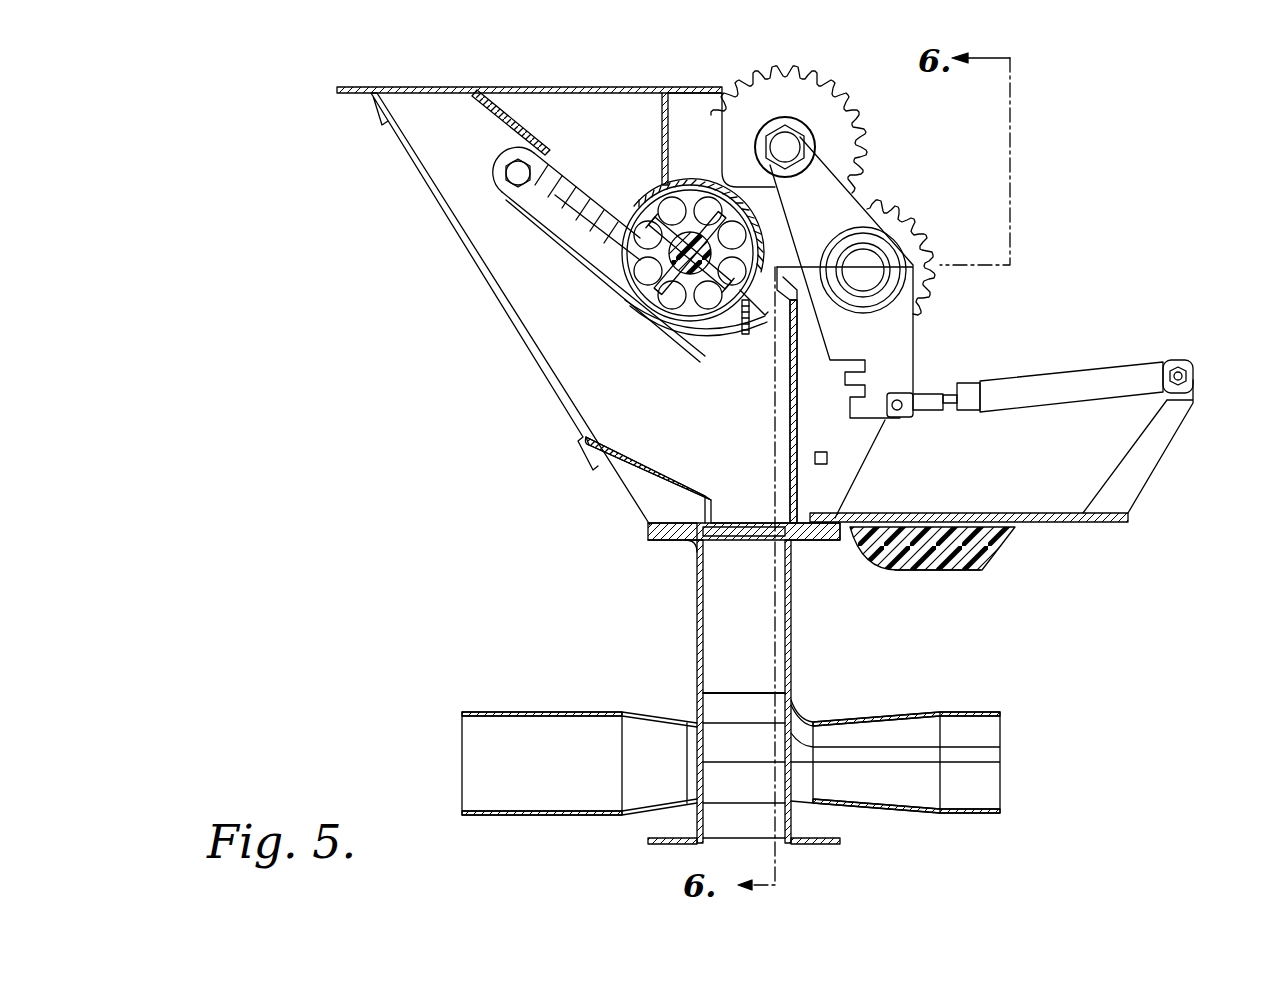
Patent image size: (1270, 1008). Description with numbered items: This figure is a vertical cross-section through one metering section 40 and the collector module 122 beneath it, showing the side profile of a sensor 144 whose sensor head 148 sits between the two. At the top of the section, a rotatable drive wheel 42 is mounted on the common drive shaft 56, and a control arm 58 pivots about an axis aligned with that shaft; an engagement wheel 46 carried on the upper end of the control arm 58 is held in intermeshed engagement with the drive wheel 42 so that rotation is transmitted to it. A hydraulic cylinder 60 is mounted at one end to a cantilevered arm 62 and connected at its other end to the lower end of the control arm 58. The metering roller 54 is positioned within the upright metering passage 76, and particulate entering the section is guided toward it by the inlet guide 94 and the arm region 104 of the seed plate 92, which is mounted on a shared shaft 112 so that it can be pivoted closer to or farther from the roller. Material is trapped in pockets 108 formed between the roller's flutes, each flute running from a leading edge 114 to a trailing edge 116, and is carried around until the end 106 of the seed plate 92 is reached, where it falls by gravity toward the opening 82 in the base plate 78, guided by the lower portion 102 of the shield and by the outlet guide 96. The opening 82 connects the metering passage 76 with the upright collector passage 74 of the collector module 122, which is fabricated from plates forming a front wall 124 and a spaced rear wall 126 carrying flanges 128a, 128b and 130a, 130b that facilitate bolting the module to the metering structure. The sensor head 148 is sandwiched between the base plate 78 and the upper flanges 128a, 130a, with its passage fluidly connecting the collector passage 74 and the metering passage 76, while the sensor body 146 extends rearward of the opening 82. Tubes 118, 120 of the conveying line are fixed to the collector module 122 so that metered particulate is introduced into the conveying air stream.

The metering section 40 is at (350, 133).
The drive wheel 42 is at (908, 222).
The engagement wheel 46 is at (843, 130).
The metering roller 54 is at (742, 232).
The drive shaft 56 is at (862, 274).
The control arm 58 is at (890, 336).
The hydraulic cylinder 60 is at (1146, 372).
The cantilevered arm 62 is at (1040, 513).
The collector passage 74 is at (750, 691).
The metering passage 76 is at (584, 150).
The base plate 78 is at (721, 565).
The opening 82 is at (734, 512).
The seed plate 92 is at (522, 254).
The inlet guide 94 is at (522, 112).
The outlet guide 96 is at (640, 457).
The lower portion 102 is at (797, 467).
The arm region 104 is at (605, 235).
The end 106 is at (742, 322).
The pockets 108 is at (730, 230).
The shaft 112 is at (514, 173).
The leading edge 114 is at (630, 283).
The trailing edge 116 is at (628, 255).
The tube 118 is at (978, 800).
The tube 120 is at (490, 800).
The collector module 122 is at (720, 741).
The front wall 124 is at (694, 676).
The rear wall 126 is at (793, 655).
The flange 128a is at (658, 545).
The flange 128b is at (655, 845).
The flange 130a is at (815, 545).
The flange 130b is at (820, 848).
The sensor 144 is at (944, 580).
The sensor body 146 is at (990, 550).
The sensor head 148 is at (676, 545).